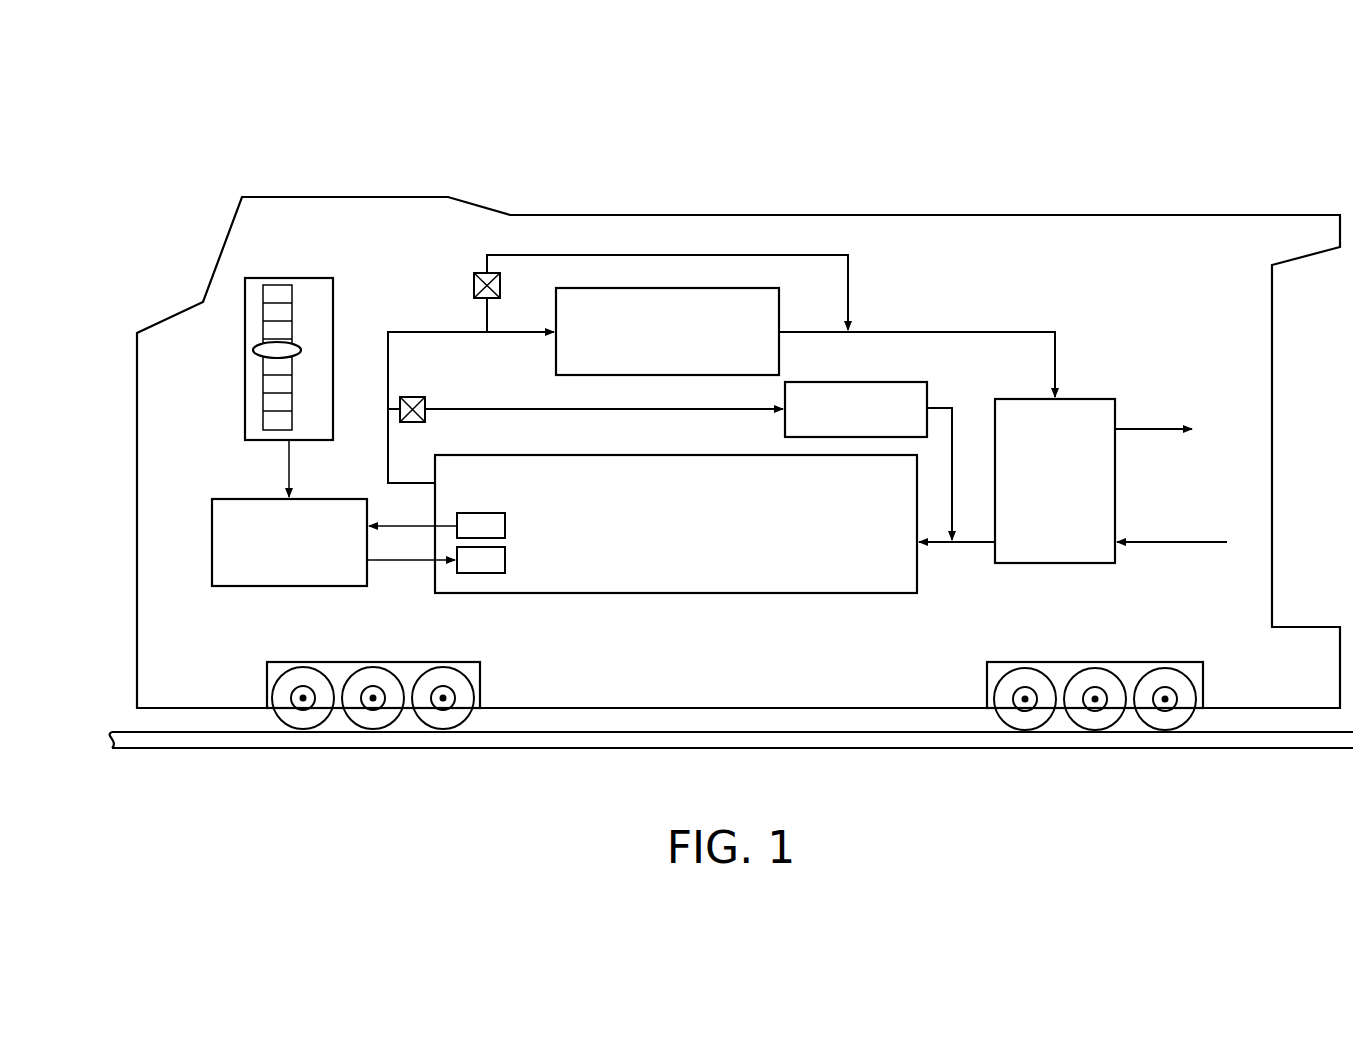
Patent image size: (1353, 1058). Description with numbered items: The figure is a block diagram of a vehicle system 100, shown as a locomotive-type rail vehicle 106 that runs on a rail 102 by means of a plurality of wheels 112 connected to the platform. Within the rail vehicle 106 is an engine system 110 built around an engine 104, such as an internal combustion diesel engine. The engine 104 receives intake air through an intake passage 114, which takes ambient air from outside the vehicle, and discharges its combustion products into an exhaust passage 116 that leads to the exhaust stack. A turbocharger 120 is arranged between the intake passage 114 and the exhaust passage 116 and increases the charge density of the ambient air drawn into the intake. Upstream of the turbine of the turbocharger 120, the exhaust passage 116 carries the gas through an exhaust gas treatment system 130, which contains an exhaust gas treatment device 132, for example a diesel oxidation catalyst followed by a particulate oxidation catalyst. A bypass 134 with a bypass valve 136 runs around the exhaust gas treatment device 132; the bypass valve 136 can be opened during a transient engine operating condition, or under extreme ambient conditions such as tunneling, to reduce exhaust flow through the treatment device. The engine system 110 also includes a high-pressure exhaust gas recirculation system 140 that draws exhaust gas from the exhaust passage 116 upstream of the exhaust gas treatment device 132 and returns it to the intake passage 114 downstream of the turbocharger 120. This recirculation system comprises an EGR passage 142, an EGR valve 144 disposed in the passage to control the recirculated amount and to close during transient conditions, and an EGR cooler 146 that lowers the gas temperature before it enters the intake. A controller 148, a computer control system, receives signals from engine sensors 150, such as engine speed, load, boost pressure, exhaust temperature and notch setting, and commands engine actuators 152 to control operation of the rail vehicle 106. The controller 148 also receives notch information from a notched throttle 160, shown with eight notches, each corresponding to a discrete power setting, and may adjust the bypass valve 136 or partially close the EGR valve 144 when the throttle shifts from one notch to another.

The vehicle system 100 is at (738, 411).
The rail 102 is at (1270, 749).
The engine 104 is at (676, 524).
The rail vehicle 106 is at (1025, 215).
The engine system 110 is at (1066, 276).
The wheels 112 is at (466, 690).
The intake passage 114 is at (1150, 543).
The exhaust passage 116 is at (387, 455).
The turbocharger 120 is at (1055, 481).
The exhaust gas treatment system 130 is at (868, 264).
The exhaust gas treatment device 132 is at (667, 331).
The bypass 134 is at (677, 255).
The bypass valve 136 is at (474, 280).
The exhaust gas recirculation system 140 is at (936, 382).
The EGR passage 142 is at (474, 408).
The EGR valve 144 is at (412, 423).
The EGR cooler 146 is at (868, 461).
The controller 148 is at (289, 542).
The engine sensors 150 is at (437, 525).
The engine actuators 152 is at (436, 560).
The notched throttle 160 is at (336, 291).